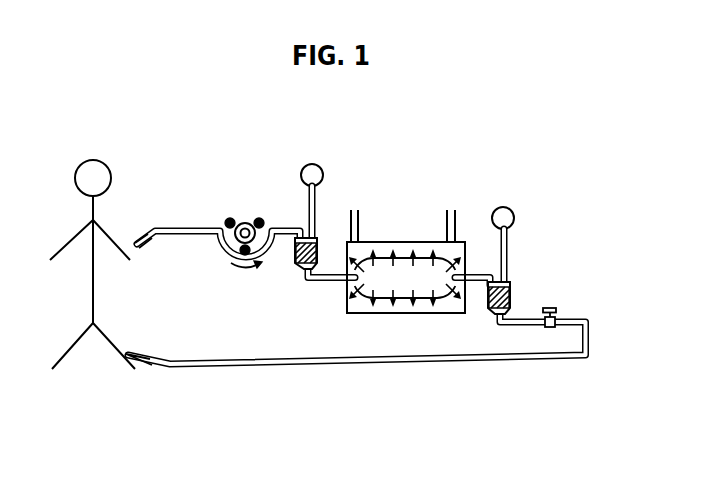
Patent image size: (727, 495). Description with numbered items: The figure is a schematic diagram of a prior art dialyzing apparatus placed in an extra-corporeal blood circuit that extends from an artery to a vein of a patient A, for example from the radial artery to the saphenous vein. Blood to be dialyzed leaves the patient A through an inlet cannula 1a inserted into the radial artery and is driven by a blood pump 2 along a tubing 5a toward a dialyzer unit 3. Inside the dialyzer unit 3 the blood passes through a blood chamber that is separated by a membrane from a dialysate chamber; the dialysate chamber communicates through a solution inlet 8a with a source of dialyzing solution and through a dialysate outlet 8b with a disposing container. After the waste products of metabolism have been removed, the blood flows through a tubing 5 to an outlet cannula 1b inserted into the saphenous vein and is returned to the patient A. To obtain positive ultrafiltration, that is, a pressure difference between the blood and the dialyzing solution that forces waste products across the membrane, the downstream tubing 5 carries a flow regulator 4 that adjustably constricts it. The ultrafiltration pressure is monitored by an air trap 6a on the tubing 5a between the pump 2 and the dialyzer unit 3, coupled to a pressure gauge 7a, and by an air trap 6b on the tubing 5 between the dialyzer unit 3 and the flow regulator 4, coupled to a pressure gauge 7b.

The patient A is at (93, 160).
The inlet cannula 1a is at (134, 242).
The outlet cannula 1b is at (130, 353).
The tubing 5a is at (185, 227).
The blood pump 2 is at (244, 224).
The pressure gauge 7a is at (312, 164).
The air trap 6a is at (297, 270).
The dialyzer unit 3 is at (401, 242).
The solution inlet 8a is at (353, 210).
The dialysate outlet 8b is at (451, 210).
The pressure gauge 7b is at (510, 208).
The air trap 6b is at (487, 311).
The flow regulator 4 is at (553, 311).
The tubing 5 is at (589, 320).